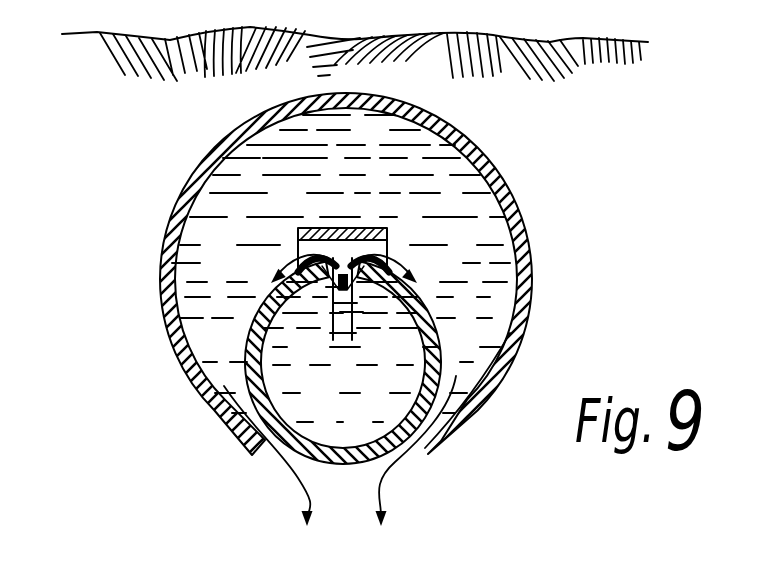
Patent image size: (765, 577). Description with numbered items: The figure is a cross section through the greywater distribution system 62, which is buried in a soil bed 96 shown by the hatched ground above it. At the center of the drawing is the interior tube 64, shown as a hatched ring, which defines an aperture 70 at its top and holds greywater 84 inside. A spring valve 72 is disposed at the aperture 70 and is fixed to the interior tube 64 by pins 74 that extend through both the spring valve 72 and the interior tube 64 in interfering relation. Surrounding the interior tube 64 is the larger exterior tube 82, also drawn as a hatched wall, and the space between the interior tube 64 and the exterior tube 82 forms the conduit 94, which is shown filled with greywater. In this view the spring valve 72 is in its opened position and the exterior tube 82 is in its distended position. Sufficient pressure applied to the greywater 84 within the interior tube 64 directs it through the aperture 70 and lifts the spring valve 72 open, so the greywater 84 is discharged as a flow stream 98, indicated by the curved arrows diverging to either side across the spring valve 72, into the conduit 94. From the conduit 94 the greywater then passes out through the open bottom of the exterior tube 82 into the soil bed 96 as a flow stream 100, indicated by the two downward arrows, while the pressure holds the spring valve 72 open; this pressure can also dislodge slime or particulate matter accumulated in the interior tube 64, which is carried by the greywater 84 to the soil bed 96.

The greywater distribution system 62 is at (328, 274).
The interior tube 64 is at (258, 341).
The apertures 70 is at (333, 285).
The spring valve 72 is at (388, 234).
The pins 74 is at (357, 292).
The exterior tube 82 is at (498, 190).
The greywater 84 is at (390, 380).
The conduit 94 is at (438, 170).
The soil bed 96 is at (180, 101).
The flow stream 98 is at (287, 263).
The flow stream 100 is at (297, 466).